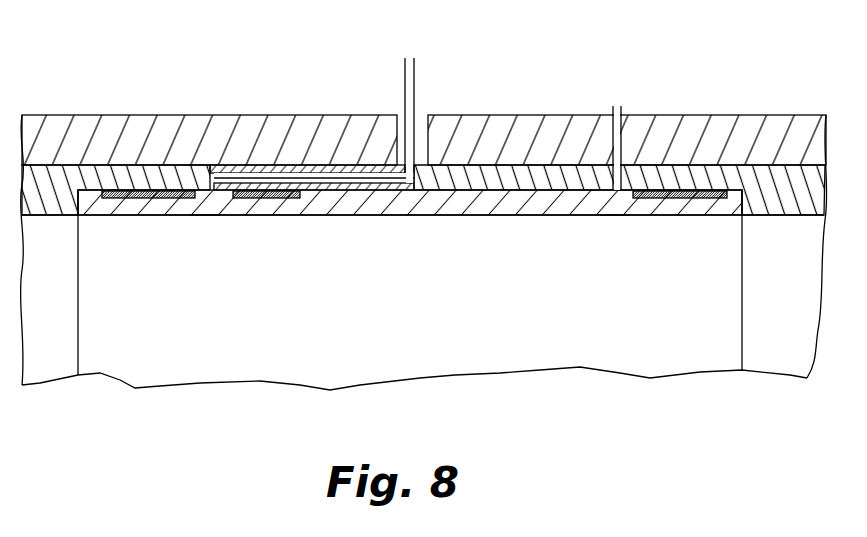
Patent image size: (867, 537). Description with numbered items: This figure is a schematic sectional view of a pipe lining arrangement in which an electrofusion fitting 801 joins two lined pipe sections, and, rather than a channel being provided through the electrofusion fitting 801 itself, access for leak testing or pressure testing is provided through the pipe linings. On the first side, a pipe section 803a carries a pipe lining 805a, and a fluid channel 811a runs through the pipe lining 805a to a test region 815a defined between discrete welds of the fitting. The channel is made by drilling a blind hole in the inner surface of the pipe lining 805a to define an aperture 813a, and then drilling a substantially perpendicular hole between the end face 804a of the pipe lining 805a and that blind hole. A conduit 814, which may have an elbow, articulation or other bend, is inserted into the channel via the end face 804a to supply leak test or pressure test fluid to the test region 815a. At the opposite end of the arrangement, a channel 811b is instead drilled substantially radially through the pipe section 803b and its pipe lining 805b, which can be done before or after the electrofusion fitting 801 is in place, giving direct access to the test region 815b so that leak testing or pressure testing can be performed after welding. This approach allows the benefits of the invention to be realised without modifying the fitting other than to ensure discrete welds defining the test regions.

The electrofusion fitting 801 is at (470, 200).
The pipe section 803a is at (83, 137).
The pipe section 803b is at (725, 137).
The end face 804a is at (356, 166).
The pipe lining 805a is at (176, 175).
The pipe lining 805b is at (790, 182).
The fluid channel 811a is at (386, 195).
The channel 811b is at (611, 138).
The aperture 813a is at (213, 188).
The conduit 814 is at (410, 80).
The test region 815a is at (205, 216).
The test region 815b is at (618, 214).